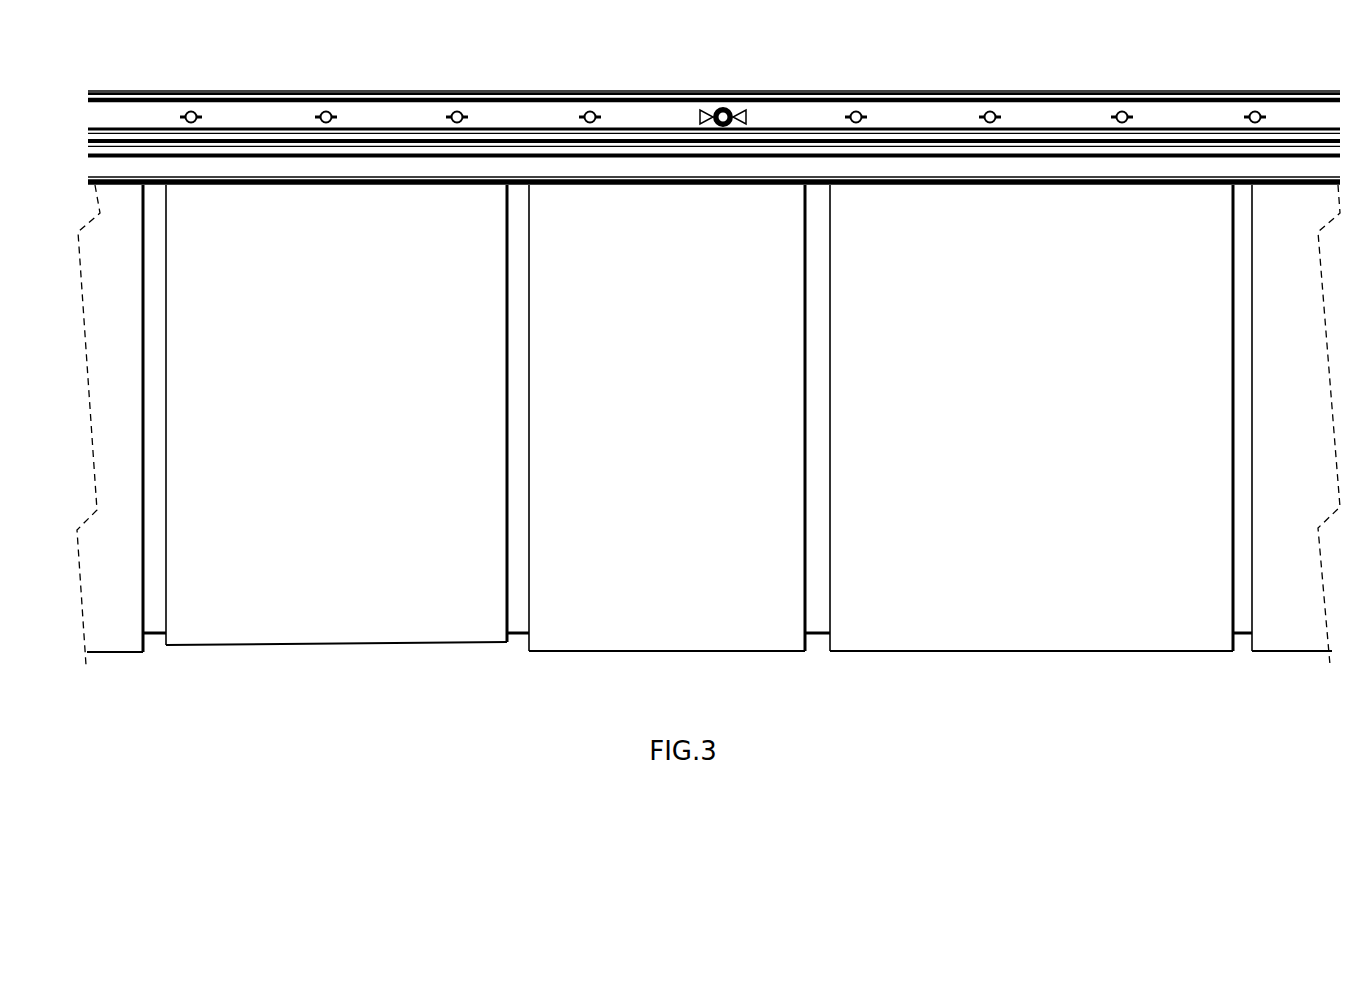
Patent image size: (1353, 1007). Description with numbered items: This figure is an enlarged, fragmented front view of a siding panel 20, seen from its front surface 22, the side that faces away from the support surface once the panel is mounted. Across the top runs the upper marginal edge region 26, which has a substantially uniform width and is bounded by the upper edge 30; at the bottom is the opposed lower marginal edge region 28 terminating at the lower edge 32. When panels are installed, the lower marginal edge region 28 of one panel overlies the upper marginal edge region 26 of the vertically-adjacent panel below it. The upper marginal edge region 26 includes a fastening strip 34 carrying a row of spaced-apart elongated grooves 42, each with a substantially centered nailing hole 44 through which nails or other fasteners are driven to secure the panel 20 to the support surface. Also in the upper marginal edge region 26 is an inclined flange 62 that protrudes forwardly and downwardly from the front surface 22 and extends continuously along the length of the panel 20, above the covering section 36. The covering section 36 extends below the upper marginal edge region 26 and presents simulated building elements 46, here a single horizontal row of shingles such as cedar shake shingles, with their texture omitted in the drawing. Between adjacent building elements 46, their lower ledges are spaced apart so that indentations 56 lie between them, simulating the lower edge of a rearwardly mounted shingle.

The panel 20 is at (714, 93).
The front surface 22 is at (681, 407).
The upper marginal edge region 26 is at (400, 164).
The lower marginal edge region 28 is at (1085, 443).
The upper edge 30 is at (527, 88).
The lower edge 32 is at (1031, 653).
The fastening strip 34 is at (906, 118).
The covering section 36 is at (365, 562).
The elongated grooves 42 is at (306, 117).
The nailing hole 44 is at (191, 110).
The simulated building elements 46 is at (423, 615).
The indentations 56 is at (153, 642).
The inclined flange 62 is at (620, 170).